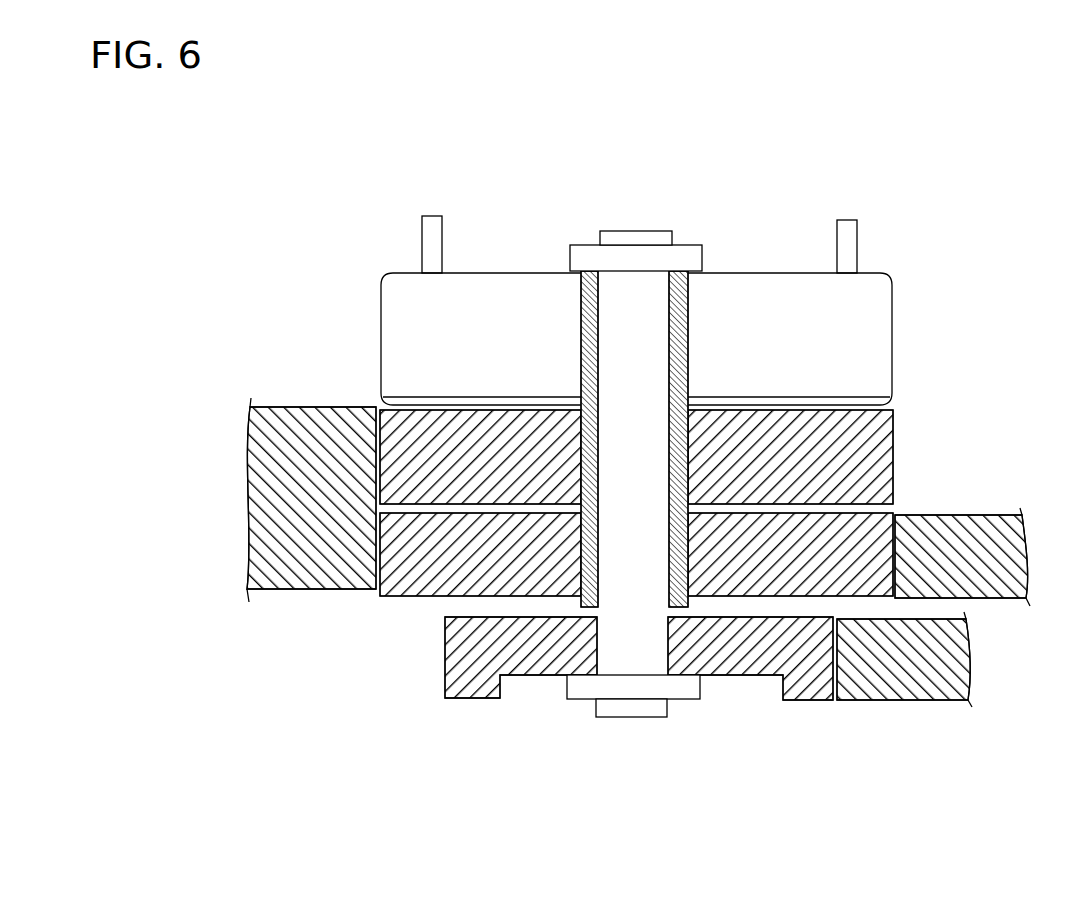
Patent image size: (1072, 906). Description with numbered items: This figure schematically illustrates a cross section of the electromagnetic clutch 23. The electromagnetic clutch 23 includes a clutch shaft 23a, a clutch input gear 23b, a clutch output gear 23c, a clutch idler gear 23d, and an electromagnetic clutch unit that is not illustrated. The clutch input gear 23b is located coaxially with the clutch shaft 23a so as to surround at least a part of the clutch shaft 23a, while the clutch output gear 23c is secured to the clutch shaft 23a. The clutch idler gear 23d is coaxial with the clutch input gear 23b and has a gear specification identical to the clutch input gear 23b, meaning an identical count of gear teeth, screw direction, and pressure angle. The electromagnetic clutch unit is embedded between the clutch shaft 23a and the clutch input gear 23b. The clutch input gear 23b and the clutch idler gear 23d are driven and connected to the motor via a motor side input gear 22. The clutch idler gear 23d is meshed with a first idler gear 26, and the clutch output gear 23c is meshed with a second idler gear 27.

The motor side input gear 22 is at (291, 407).
The electromagnetic clutch 23 is at (512, 225).
The clutch shaft 23a is at (631, 240).
The clutch input gear 23b is at (895, 443).
The clutch output gear 23c is at (443, 675).
The clutch idler gear 23d is at (407, 597).
The first idler gear 26 is at (998, 515).
The second idler gear 27 is at (922, 703).